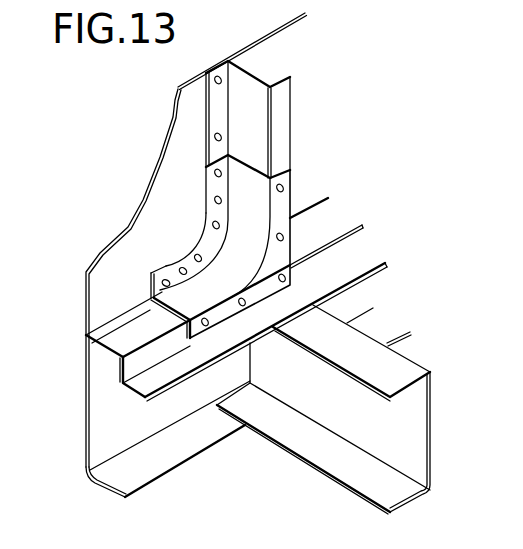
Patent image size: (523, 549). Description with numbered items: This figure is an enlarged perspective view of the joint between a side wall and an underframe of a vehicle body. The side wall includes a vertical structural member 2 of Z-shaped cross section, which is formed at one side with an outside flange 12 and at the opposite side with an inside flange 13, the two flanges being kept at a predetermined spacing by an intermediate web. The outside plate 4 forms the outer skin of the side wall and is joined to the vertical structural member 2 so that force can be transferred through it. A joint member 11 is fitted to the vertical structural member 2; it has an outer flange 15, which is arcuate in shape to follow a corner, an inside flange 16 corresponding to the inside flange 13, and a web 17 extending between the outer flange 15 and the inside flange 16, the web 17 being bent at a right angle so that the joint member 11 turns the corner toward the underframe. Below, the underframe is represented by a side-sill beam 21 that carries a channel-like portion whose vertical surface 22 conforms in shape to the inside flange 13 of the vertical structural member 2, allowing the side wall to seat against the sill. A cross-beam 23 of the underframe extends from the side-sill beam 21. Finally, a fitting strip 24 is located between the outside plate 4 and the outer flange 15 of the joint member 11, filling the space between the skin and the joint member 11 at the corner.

The vertical structural member 2 is at (247, 80).
The outside plate 4 is at (158, 182).
The joint member 11 is at (262, 236).
The outside flange 12 is at (212, 107).
The inside flange 13 is at (289, 100).
The outer flange 15 is at (152, 274).
The inside flange 16 is at (288, 200).
The web 17 is at (180, 303).
The side-sill beam 21 is at (98, 437).
The vertical surface 22 is at (120, 383).
The cross-beam 23 is at (393, 363).
The fitting strip 24 is at (174, 266).